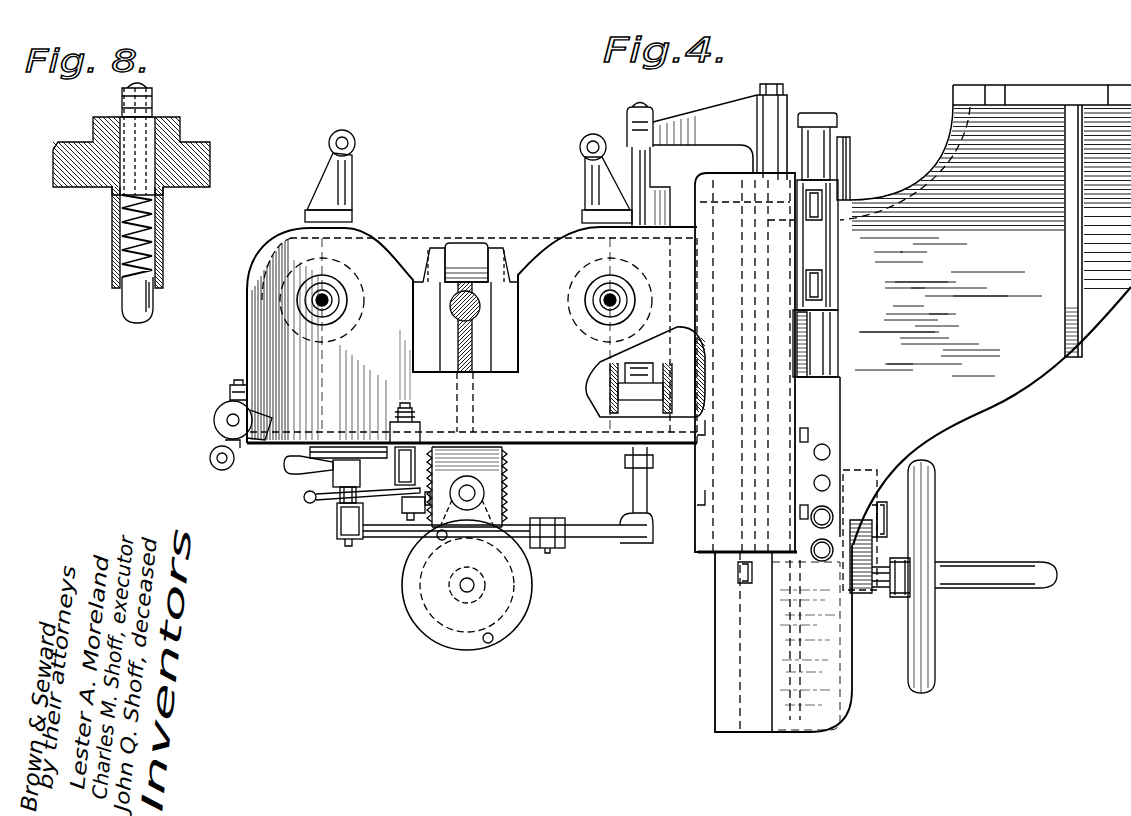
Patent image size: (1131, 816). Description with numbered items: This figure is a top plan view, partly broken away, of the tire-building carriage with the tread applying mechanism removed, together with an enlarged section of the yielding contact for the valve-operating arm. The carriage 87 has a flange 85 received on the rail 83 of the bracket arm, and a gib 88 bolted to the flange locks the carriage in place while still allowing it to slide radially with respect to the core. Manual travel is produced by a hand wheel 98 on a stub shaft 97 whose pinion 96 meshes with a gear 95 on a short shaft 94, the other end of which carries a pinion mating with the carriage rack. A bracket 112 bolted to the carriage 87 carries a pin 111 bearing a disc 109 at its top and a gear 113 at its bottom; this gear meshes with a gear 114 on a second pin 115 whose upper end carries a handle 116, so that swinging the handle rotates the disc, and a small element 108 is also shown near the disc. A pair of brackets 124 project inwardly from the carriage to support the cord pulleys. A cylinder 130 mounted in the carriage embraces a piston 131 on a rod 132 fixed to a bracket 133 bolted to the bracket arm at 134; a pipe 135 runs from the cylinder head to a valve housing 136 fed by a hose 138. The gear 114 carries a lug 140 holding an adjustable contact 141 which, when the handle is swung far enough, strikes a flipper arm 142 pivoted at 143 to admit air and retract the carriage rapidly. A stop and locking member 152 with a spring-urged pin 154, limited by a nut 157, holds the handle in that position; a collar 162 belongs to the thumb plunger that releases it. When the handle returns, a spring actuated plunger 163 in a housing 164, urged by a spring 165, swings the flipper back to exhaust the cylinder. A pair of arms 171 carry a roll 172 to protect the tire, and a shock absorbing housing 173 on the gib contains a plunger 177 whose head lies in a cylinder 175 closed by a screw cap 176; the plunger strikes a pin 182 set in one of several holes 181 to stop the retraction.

In FIG. 4, the upper rail 83 is at (718, 620).
In FIG. 4, the flange 85 is at (653, 453).
In FIG. 8, the carriage 87 is at (190, 146).
In FIG. 4, the carriage 87 is at (472, 342).
In FIG. 4, the gib 88 is at (780, 565).
In FIG. 4, the short shaft 94 is at (889, 520).
In FIG. 4, the gear 95 is at (884, 555).
In FIG. 4, the pinion 96 is at (862, 595).
In FIG. 4, the stub shaft 97 is at (882, 610).
In FIG. 4, the hand wheel 98 is at (933, 640).
In FIG. 4, the pin 108 is at (380, 585).
In FIG. 4, the disc 109 is at (470, 650).
In FIG. 4, the pin 111 is at (462, 592).
In FIG. 4, the bracket 112 is at (580, 517).
In FIG. 4, the gear 113 is at (520, 577).
In FIG. 4, the gear 114 is at (486, 492).
In FIG. 4, the pin 115 is at (505, 470).
In FIG. 4, the handle 116 is at (250, 450).
In FIG. 4, the bracket 124 is at (372, 188).
In FIG. 4, the cylinder 130 is at (603, 378).
In FIG. 4, the piston 131 is at (617, 393).
In FIG. 4, the rod 132 is at (655, 170).
In FIG. 4, the bracket 133 is at (705, 105).
In FIG. 4, the bolt connection 134 is at (783, 88).
In FIG. 4, the pipe 135 is at (630, 495).
In FIG. 4, the valve housing 136 is at (342, 540).
In FIG. 4, the pipe or flexible hose 138 is at (290, 474).
In FIG. 4, the lug 140 is at (407, 512).
In FIG. 4, the adjustable contact 141 is at (425, 500).
In FIG. 4, the flipper arm 142 is at (340, 500).
In FIG. 4, the pivot 143 is at (305, 500).
In FIG. 4, the stop and locking member 152 is at (213, 450).
In FIG. 4, the pin 154 is at (215, 465).
In FIG. 4, the nut 157 is at (230, 468).
In FIG. 4, the collar 162 is at (227, 420).
In FIG. 8, the spring actuated plunger 163 is at (128, 305).
In FIG. 8, the housing 164 is at (165, 237).
In FIG. 4, the housing 164 is at (388, 440).
In FIG. 8, the spring 165 is at (118, 214).
In FIG. 4, the arm 171 is at (440, 253).
In FIG. 4, the roll 172 is at (467, 240).
In FIG. 4, the housing 173 is at (815, 250).
In FIG. 4, the cylinder 175 is at (850, 158).
In FIG. 4, the screw cap 176 is at (830, 113).
In FIG. 4, the plunger 177 is at (818, 337).
In FIG. 4, the holes 181 is at (828, 450).
In FIG. 4, the pin 182 is at (828, 512).